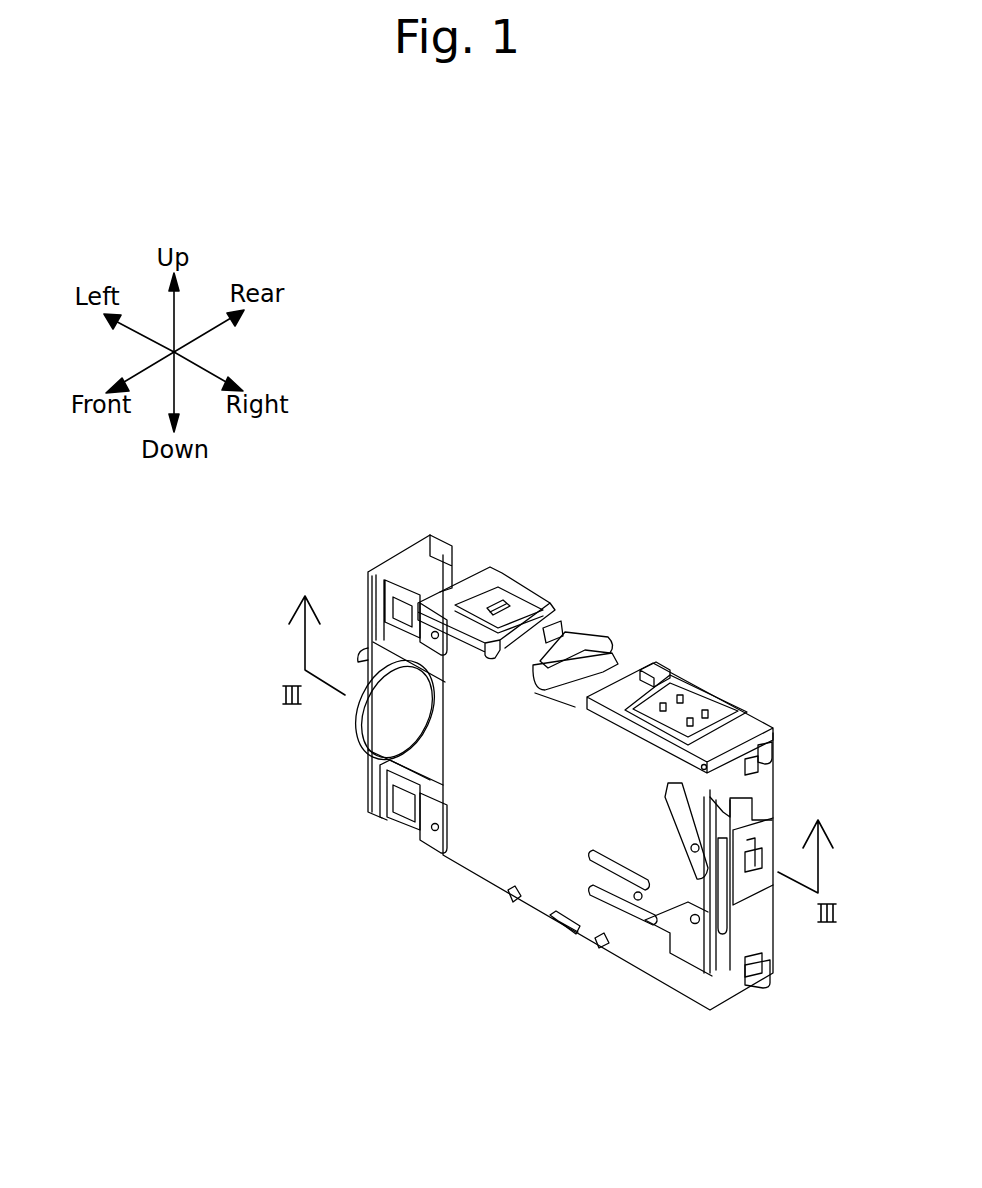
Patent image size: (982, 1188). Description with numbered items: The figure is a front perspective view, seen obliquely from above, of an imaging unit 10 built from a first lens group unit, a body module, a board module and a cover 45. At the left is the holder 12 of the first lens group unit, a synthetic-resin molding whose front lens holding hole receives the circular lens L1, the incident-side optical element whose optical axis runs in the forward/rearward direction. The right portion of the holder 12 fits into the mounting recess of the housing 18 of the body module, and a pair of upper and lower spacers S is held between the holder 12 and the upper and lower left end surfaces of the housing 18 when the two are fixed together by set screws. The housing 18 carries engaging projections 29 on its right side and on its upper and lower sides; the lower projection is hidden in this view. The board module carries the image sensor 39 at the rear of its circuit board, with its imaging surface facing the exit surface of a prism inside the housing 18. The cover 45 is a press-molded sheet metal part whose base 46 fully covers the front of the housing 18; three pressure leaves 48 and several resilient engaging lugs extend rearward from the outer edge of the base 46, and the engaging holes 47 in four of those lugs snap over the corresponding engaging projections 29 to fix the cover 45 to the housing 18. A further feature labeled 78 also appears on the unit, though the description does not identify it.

The imaging unit 10 is at (740, 572).
The holder 12 is at (372, 793).
The housing 18 is at (770, 798).
The engaging projection 29 is at (560, 630).
The image sensor 39 is at (720, 920).
The cover 45 is at (537, 907).
The base 46 is at (484, 866).
The engaging hole 47 is at (557, 634).
The pressure leaf 48 is at (598, 850).
The protrusion 78 is at (588, 932).
The spacer S is at (432, 560).
The lens L1 is at (358, 690).